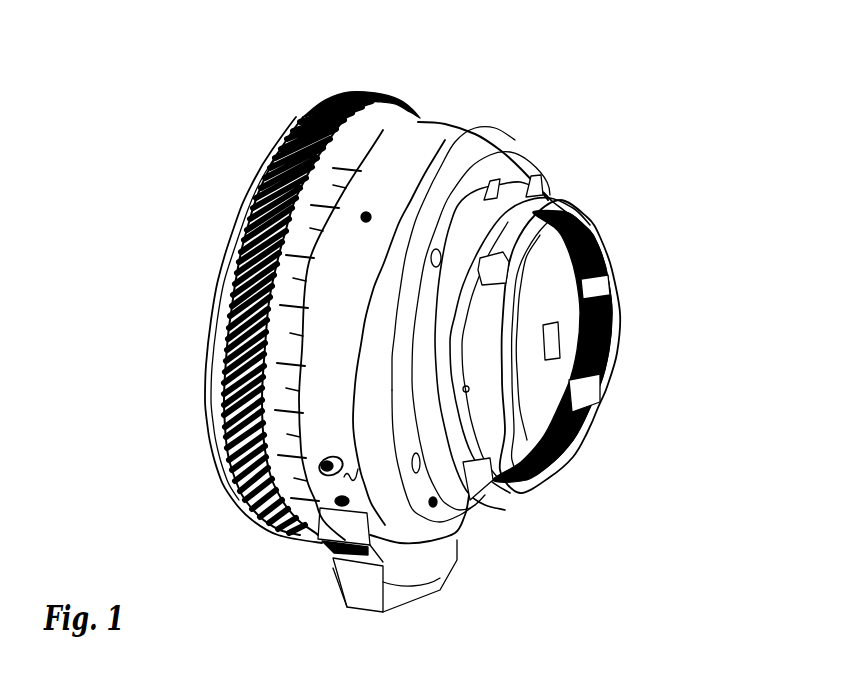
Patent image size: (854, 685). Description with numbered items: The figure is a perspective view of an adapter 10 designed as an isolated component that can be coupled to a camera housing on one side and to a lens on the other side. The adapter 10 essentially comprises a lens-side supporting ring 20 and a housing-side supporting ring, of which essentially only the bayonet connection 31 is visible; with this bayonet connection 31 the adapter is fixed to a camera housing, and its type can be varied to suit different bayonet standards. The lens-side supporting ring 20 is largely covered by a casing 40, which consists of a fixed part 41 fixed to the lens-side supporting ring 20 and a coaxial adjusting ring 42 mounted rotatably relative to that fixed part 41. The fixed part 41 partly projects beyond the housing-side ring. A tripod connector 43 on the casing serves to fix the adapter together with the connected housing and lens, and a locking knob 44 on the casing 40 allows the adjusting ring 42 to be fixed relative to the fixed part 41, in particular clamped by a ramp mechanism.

The adapter 10 is at (638, 120).
The lens-side supporting ring 20 is at (230, 225).
The bayonet connection 31 is at (607, 263).
The casing 40 is at (427, 99).
The fixed part 41 is at (435, 155).
The adjusting ring 42 is at (323, 102).
The tripod connector 43 is at (420, 568).
The locking knob 44 is at (312, 467).